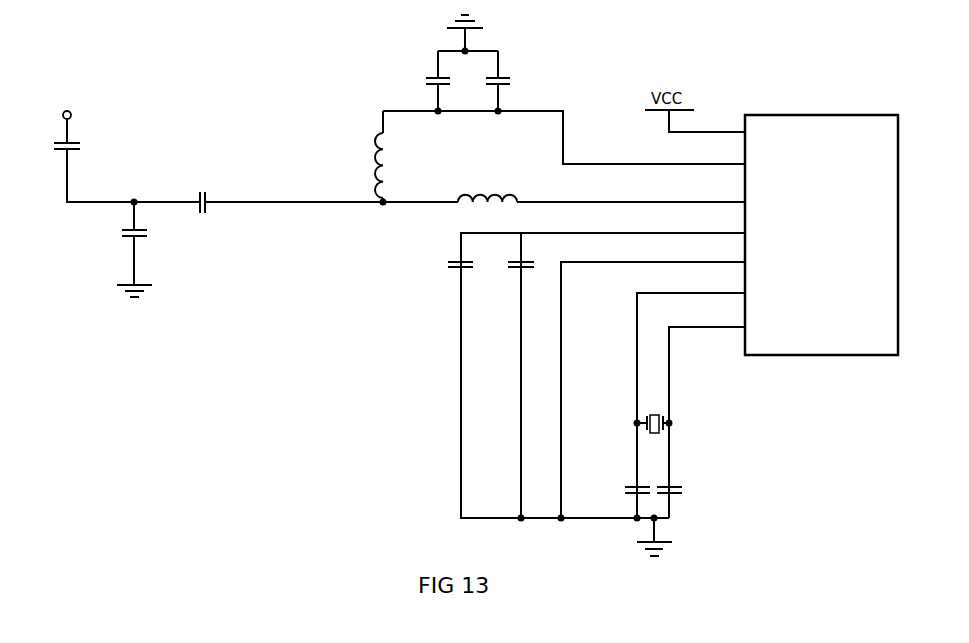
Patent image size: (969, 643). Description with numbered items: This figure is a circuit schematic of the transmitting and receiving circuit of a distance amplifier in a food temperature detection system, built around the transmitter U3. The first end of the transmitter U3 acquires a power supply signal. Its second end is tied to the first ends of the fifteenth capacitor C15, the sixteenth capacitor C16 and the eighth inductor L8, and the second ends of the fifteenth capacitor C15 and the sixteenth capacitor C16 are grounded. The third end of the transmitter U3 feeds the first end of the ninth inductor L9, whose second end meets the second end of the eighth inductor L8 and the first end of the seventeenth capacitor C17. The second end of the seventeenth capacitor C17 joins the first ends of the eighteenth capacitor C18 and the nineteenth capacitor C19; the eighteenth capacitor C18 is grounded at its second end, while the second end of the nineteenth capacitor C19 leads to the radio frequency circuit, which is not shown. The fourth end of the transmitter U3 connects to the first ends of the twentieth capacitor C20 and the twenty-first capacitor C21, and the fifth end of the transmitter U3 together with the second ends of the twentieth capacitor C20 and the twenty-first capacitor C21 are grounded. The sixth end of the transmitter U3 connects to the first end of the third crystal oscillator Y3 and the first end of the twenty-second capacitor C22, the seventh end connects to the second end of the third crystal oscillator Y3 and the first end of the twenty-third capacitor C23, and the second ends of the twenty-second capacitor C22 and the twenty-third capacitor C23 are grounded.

The fifteenth capacitor C15 is at (515, 80).
The sixteenth capacitor C16 is at (423, 80).
The seventeenth capacitor C17 is at (205, 216).
The eighteenth capacitor C18 is at (120, 232).
The nineteenth capacitor C19 is at (52, 147).
The twentieth capacitor C20 is at (445, 265).
The twenty-first capacitor C21 is at (507, 265).
The twenty-second capacitor C22 is at (622, 490).
The twenty-third capacitor C23 is at (688, 490).
The eighth inductor L8 is at (368, 165).
The ninth inductor L9 is at (487, 187).
The third crystal oscillator Y3 is at (653, 413).
The transmitter U3 is at (814, 235).